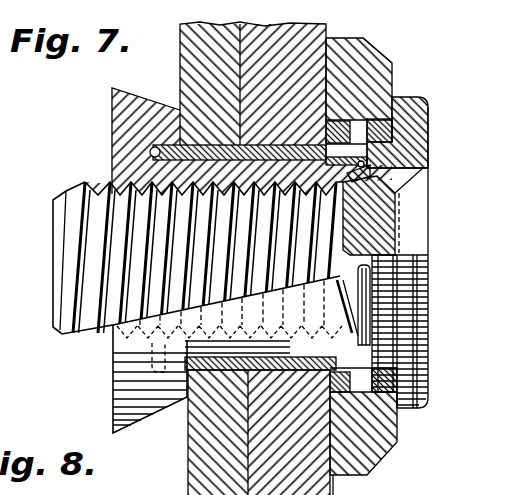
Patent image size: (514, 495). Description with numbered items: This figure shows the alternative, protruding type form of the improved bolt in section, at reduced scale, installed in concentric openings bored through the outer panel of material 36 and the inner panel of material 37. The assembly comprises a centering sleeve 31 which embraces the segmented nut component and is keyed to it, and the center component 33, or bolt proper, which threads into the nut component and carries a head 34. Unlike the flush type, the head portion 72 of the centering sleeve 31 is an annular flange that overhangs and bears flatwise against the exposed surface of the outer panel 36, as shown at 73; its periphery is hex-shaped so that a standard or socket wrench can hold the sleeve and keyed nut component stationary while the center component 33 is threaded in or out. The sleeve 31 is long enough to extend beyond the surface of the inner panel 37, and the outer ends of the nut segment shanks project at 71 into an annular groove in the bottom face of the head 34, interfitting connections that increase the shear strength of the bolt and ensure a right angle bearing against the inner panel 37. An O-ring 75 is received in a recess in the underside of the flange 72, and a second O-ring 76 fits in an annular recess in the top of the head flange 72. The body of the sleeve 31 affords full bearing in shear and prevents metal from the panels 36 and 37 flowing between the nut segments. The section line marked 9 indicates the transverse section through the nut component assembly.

The centering sleeve 31 is at (150, 152).
The center component 33 is at (53, 268).
The head 34 is at (428, 300).
The outer panel of material 36 is at (300, 37).
The inner panel of material 37 is at (193, 53).
The projecting outer ends of nut segment shanks 71 is at (428, 167).
The head portion of centering sleeve 72 is at (391, 63).
The bearing of head flange against outer panel 73 is at (327, 62).
The O-ring 75 is at (330, 118).
The O-ring 76 is at (392, 128).
The section line 9- 9 is at (305, 172).